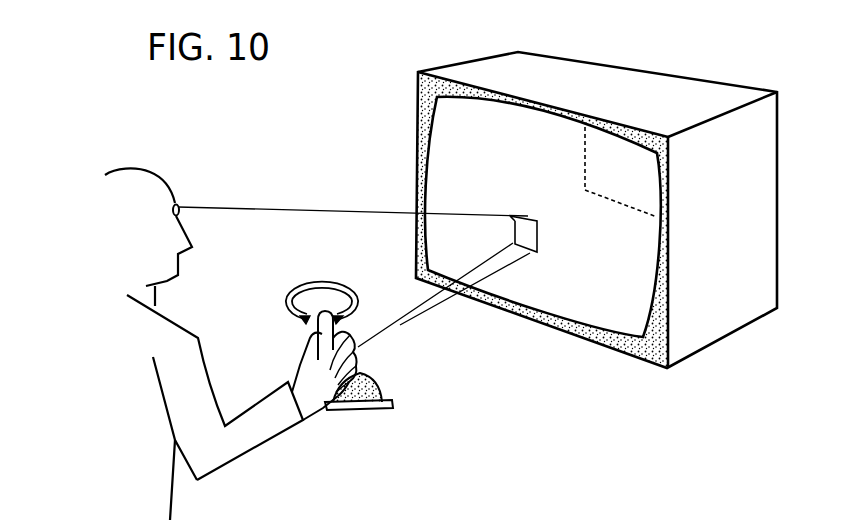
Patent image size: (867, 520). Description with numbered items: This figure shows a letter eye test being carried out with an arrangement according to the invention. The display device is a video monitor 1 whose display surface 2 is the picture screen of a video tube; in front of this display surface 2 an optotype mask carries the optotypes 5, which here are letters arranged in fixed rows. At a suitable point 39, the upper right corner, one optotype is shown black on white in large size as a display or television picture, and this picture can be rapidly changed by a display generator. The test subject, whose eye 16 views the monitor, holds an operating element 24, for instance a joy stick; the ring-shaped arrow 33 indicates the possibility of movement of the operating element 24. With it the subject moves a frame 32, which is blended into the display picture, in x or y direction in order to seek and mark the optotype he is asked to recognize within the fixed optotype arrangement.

The video monitor 1 is at (635, 83).
The display surface 2 is at (635, 318).
The optotypes 5 is at (440, 202).
The eye of the subject 16 is at (178, 206).
The operating element 24 is at (308, 333).
The frame 32 is at (526, 253).
The ring-shaped arrow 33 is at (312, 277).
The point 39 is at (643, 183).